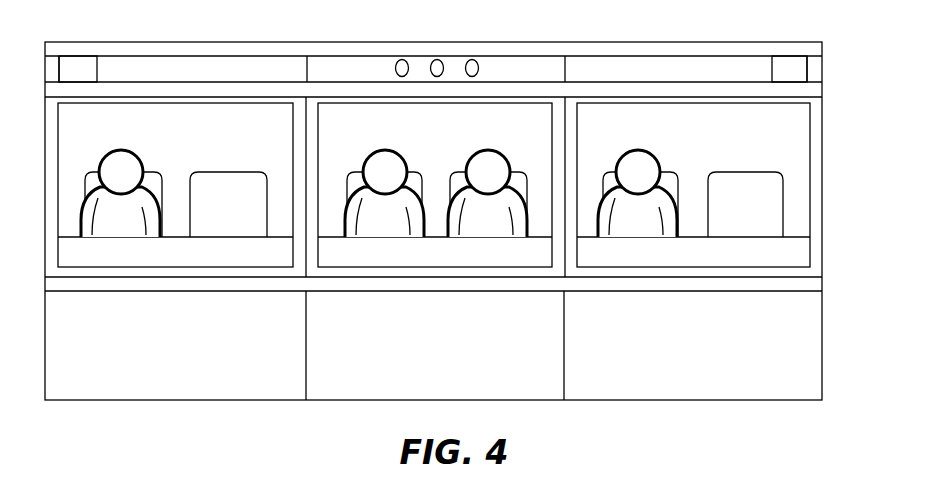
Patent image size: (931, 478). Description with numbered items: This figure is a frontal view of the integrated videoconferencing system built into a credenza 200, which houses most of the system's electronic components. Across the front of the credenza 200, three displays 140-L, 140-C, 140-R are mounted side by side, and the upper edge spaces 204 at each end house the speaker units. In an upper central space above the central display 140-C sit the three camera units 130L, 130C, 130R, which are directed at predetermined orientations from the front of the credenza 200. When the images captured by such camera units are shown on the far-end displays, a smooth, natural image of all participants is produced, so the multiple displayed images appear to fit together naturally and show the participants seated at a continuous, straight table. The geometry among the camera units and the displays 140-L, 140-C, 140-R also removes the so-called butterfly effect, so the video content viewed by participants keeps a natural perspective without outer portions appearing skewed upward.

The credenza 200 is at (204, 42).
The upper edge space 204 is at (78, 56).
The left camera unit 130L is at (399, 59).
The center camera unit 130C is at (438, 59).
The right camera unit 130R is at (475, 59).
The left display 140-L is at (253, 277).
The central display 140-C is at (430, 277).
The right display 140-R is at (630, 277).